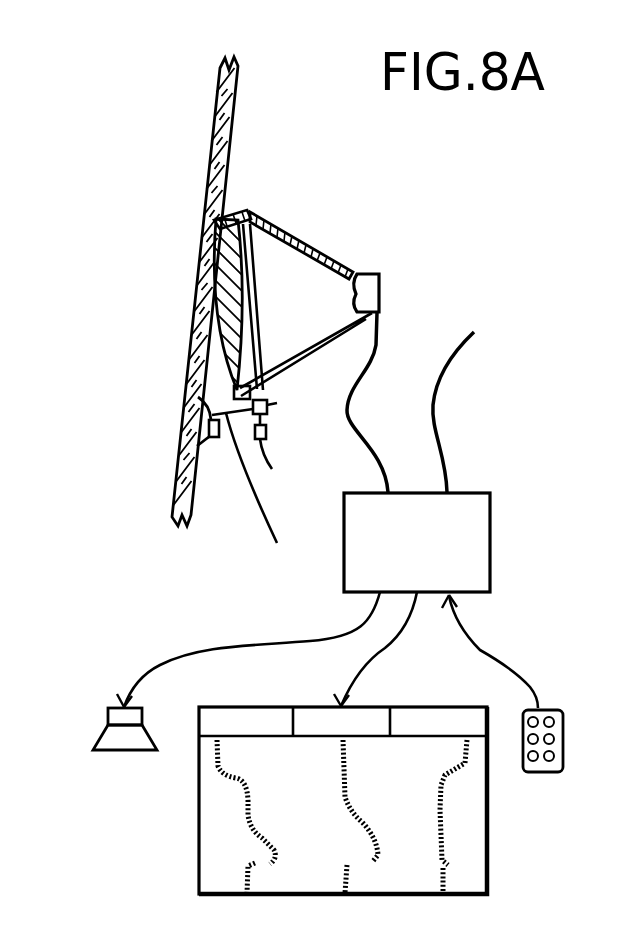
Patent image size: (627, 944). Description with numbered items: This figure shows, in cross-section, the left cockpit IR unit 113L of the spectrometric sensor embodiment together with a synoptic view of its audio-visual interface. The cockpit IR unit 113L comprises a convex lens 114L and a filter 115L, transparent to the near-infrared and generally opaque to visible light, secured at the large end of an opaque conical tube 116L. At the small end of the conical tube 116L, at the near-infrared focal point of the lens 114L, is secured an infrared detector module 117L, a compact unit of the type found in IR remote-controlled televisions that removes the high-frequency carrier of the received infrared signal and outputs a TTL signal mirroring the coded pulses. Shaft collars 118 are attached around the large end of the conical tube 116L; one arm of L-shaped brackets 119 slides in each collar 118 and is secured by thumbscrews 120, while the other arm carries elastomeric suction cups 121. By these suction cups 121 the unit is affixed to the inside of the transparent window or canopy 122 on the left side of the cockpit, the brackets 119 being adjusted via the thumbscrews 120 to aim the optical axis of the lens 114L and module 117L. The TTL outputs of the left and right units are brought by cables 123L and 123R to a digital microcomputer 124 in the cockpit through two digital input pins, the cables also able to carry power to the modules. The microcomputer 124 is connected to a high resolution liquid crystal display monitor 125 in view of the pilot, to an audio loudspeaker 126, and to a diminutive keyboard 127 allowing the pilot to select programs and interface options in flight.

The cockpit IR unit 113L is at (401, 182).
The convex lens 114L is at (200, 288).
The filter 115L is at (260, 235).
The opaque conical tube 116L is at (332, 254).
The infrared detector module 117L is at (382, 287).
The shaft collar 118 is at (268, 414).
The L-shaped bracket 119 is at (266, 499).
The thumbscrew 120 is at (289, 468).
The elastomeric suction cup 121 is at (206, 445).
The transparent window or canopy 122 is at (215, 115).
The cable 123L is at (378, 331).
The cable 123R is at (433, 412).
The digital microcomputer 124 is at (490, 558).
The liquid crystal display monitor 125 is at (487, 838).
The audio loudspeaker 126 is at (120, 752).
The keyboard 127 is at (535, 772).